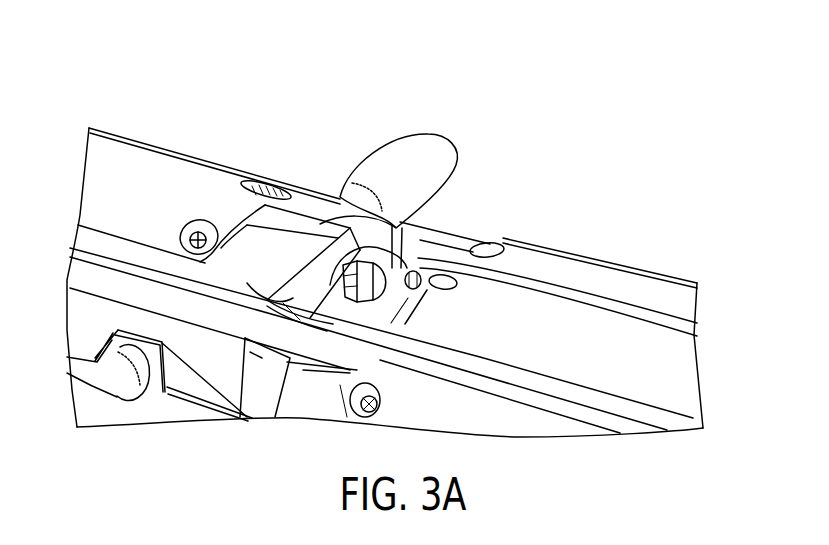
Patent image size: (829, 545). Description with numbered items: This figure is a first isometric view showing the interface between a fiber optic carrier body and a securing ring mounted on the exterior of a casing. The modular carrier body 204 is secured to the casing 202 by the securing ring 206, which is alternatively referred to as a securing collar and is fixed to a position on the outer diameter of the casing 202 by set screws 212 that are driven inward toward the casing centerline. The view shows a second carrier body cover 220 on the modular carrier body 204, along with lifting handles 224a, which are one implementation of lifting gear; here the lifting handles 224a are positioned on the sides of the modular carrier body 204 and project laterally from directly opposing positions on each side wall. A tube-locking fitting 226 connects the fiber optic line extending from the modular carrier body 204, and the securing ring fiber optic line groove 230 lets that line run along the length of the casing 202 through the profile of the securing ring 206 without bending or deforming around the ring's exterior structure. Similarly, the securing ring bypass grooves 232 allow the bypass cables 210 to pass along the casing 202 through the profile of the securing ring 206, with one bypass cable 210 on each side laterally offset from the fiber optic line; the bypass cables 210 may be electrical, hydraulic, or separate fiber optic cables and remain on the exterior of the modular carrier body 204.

The second carrier body cover 220 is at (175, 167).
The lifting handles 224a is at (428, 141).
The tube-locking fitting 226 is at (400, 219).
The securing ring 206 is at (615, 258).
The securing ring fiber optic line groove 230 is at (648, 313).
The set screws 212 is at (413, 365).
The bypass cables 210 is at (508, 390).
The securing ring bypass grooves 232 is at (578, 393).
The casing 202 is at (155, 408).
The modular carrier body 204 is at (213, 387).